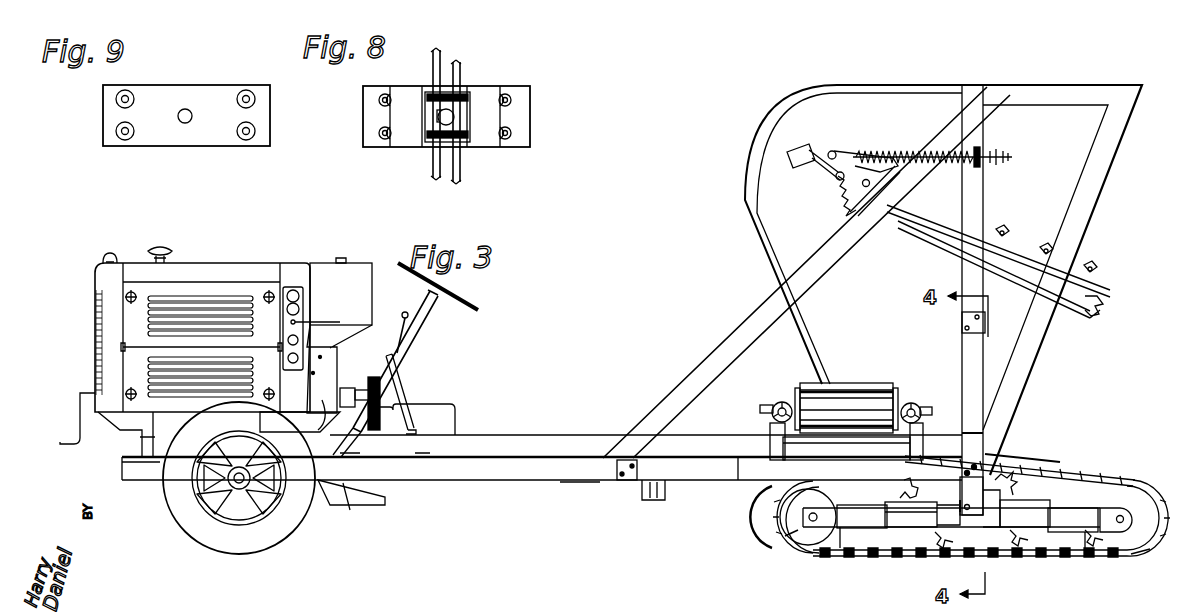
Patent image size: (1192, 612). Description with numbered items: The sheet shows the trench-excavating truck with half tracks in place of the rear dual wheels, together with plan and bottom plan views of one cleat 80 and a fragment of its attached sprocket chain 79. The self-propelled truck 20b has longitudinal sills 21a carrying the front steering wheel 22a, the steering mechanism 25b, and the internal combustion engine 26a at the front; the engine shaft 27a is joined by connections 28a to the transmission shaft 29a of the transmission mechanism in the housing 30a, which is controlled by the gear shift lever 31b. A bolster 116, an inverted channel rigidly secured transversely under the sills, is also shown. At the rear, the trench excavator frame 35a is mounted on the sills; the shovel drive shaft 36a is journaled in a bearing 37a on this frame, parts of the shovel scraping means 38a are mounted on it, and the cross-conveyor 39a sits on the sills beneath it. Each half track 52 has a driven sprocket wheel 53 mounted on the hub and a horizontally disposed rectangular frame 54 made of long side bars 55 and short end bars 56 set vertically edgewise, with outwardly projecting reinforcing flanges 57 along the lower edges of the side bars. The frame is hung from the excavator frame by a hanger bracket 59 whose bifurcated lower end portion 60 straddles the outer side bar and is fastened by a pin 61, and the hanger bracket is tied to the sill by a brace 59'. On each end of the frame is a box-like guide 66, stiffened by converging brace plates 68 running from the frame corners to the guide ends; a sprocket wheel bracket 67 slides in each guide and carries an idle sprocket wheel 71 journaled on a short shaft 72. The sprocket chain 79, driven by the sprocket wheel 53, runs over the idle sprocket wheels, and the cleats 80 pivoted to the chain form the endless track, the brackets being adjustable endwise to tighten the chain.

In FIG. 9, the cleat 80 is at (236, 92).
In FIG. 8, the cleat 80 is at (512, 91).
In FIG. 3, the cleat 80 is at (787, 536).
In FIG. 8, the sprocket chain 79 is at (461, 173).
In FIG. 3, the sprocket chain 79 is at (1136, 556).
In FIG. 3, the internal combustion engine 26a is at (88, 306).
In FIG. 3, the front steering wheel 22a is at (215, 494).
In FIG. 3, the gear shift lever 31b is at (392, 324).
In FIG. 3, the steering mechanism 25b is at (416, 333).
In FIG. 3, the engine shaft 27a is at (360, 396).
In FIG. 3, the connections 28a is at (388, 398).
In FIG. 3, the transmission housing 30a is at (446, 423).
In FIG. 3, the transmission shaft 29a is at (385, 448).
In FIG. 3, the longitudinal sill 21a is at (495, 468).
In FIG. 3, the self-propelled truck 20b is at (588, 482).
In FIG. 3, the bolster 116 is at (648, 500).
In FIG. 3, the brace 59' is at (806, 279).
In FIG. 3, the hanger bracket 59 is at (953, 300).
In FIG. 3, the cross-conveyor 39a is at (849, 404).
In FIG. 3, the shovel scraping means 38a is at (798, 166).
In FIG. 3, the bearing 37a is at (852, 197).
In FIG. 3, the shovel drive shaft 36a is at (868, 187).
In FIG. 3, the trench excavator frame 35a is at (966, 250).
In FIG. 3, the half track 52 is at (1122, 471).
In FIG. 3, the sprocket wheel 53 is at (1010, 462).
In FIG. 3, the side bar 55 is at (912, 507).
In FIG. 3, the pin 61 is at (963, 504).
In FIG. 3, the bifurcated lower end portion 60 is at (1000, 490).
In FIG. 3, the short shaft 72 is at (813, 514).
In FIG. 3, the idle sprocket wheel 71 is at (771, 521).
In FIG. 3, the sprocket wheel bracket 67 is at (826, 521).
In FIG. 3, the brace plate 68 is at (865, 522).
In FIG. 3, the rectangular frame 54 is at (910, 516).
In FIG. 3, the end bar 56 is at (988, 516).
In FIG. 3, the reinforcing flange 57 is at (1030, 524).
In FIG. 3, the box-like guide 66 is at (838, 548).